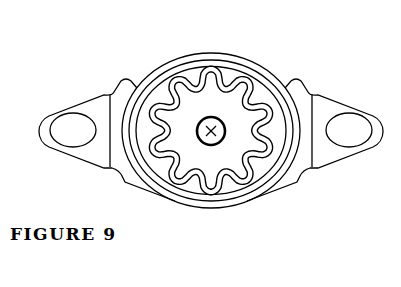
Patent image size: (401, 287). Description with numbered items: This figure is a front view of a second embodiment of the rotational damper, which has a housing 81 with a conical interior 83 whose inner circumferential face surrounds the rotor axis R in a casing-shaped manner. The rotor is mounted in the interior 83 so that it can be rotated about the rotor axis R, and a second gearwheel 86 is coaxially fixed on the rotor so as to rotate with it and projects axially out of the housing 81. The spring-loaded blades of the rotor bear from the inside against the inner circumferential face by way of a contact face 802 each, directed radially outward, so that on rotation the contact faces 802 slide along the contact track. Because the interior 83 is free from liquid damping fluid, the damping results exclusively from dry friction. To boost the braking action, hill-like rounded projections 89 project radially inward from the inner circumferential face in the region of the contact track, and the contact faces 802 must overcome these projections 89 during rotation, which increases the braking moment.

The housing 81 is at (136, 84).
The conical interior 83 is at (313, 91).
The projections 89 is at (289, 98).
The contact face 802 is at (173, 66).
The second gearwheel 86 is at (312, 91).
The rotor axis R is at (212, 141).